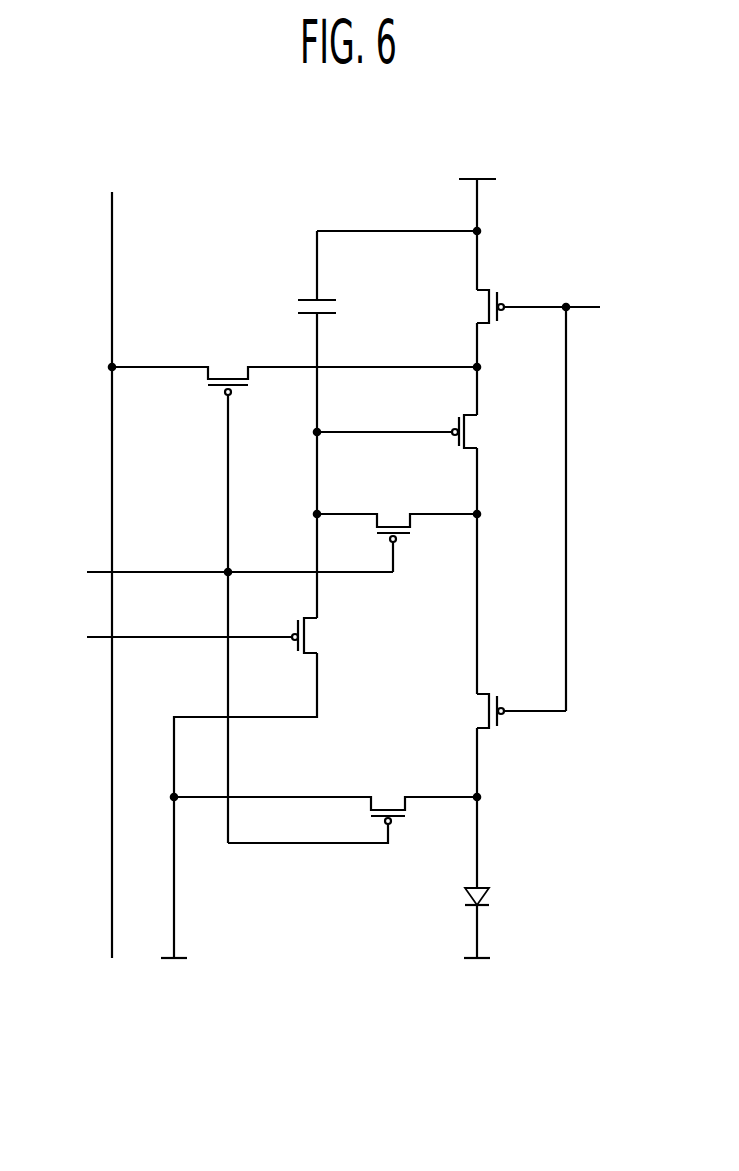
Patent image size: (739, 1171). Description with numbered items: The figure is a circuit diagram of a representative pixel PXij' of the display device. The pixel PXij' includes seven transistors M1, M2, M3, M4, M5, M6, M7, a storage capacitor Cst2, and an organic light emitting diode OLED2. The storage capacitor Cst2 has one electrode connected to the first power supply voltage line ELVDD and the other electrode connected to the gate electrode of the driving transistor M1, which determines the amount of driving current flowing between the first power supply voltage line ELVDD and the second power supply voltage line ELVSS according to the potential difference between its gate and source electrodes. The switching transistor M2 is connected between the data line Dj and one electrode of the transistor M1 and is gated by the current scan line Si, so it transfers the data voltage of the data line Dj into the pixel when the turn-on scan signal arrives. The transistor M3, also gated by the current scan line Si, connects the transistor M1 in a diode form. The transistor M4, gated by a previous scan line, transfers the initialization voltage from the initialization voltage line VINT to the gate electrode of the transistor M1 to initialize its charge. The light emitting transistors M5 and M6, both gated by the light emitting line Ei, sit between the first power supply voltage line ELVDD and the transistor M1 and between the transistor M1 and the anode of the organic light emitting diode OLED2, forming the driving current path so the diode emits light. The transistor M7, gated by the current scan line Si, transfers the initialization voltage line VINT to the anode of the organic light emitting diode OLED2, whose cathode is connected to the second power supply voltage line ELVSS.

The pixel PXij' is at (588, 108).
The data line Dj is at (111, 555).
The current scan line Si is at (227, 571).
The light emitting line Ei is at (565, 488).
The first power supply voltage line ELVDD is at (477, 218).
The second power supply voltage line ELVSS is at (477, 976).
The initialization voltage line VINT is at (174, 976).
The driving transistor M1 is at (407, 432).
The switching transistor M2 is at (294, 589).
The transistor M3 is at (395, 527).
The transistor M4 is at (258, 788).
The light emitting transistor M5 is at (527, 307).
The light emitting transistor M6 is at (509, 712).
The transistor M7 is at (324, 804).
The storage capacitor Cst2 is at (340, 424).
The organic light emitting diode OLED2 is at (506, 920).